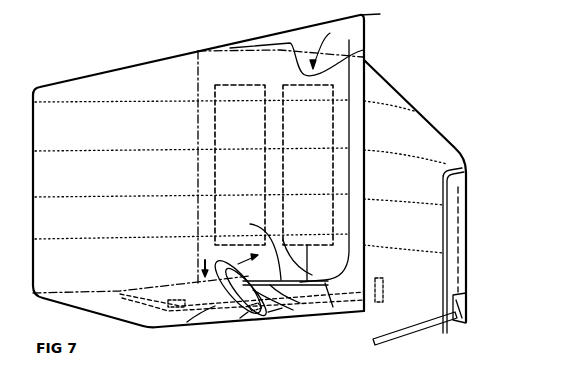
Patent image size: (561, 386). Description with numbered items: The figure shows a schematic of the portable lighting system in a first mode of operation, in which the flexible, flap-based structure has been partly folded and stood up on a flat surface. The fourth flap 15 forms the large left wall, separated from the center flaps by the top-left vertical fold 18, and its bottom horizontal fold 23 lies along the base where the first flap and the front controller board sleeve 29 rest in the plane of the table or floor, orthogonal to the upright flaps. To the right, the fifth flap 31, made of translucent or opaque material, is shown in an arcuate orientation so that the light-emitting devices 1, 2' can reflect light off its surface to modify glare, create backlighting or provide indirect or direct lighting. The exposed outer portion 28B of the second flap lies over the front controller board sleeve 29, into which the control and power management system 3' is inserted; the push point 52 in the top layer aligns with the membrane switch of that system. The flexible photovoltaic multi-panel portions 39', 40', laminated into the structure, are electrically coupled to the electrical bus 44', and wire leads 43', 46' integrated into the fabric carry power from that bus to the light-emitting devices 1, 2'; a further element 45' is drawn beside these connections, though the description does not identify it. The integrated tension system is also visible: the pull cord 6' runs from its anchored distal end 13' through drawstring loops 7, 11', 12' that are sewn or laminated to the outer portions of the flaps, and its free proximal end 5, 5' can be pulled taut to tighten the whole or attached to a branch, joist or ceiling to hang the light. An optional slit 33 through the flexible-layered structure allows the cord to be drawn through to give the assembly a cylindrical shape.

The light-emitting device 1 is at (376, 14).
The fourth flap 15 is at (98, 97).
The top-left vertical fold 18 is at (193, 182).
The bottom horizontal fold 23 is at (92, 290).
The fifth flap 31 is at (423, 135).
The light-emitting device 2' is at (227, 277).
The control and power management system 3' is at (339, 317).
The free end of pull cord 5 is at (415, 335).
The free end of pull cord 5' is at (438, 250).
The pull cord 6' is at (400, 281).
The drawstring loop 7 is at (465, 321).
The drawstring loop 11' is at (226, 334).
The drawstring loop 12' is at (161, 285).
The distal end of pull cord 13' is at (225, 284).
The outer portion of second flap 28B is at (187, 322).
The front controller board sleeve 29 is at (273, 320).
The slit 33 is at (200, 265).
The photovoltaic multi-panel portion 39' is at (308, 165).
The photovoltaic multi-panel portion 40' is at (240, 165).
The wire lead 43' is at (351, 161).
The electrical bus 44' is at (283, 316).
The arm 45' is at (270, 247).
The wire lead 46' is at (294, 265).
The push point 52 is at (255, 318).